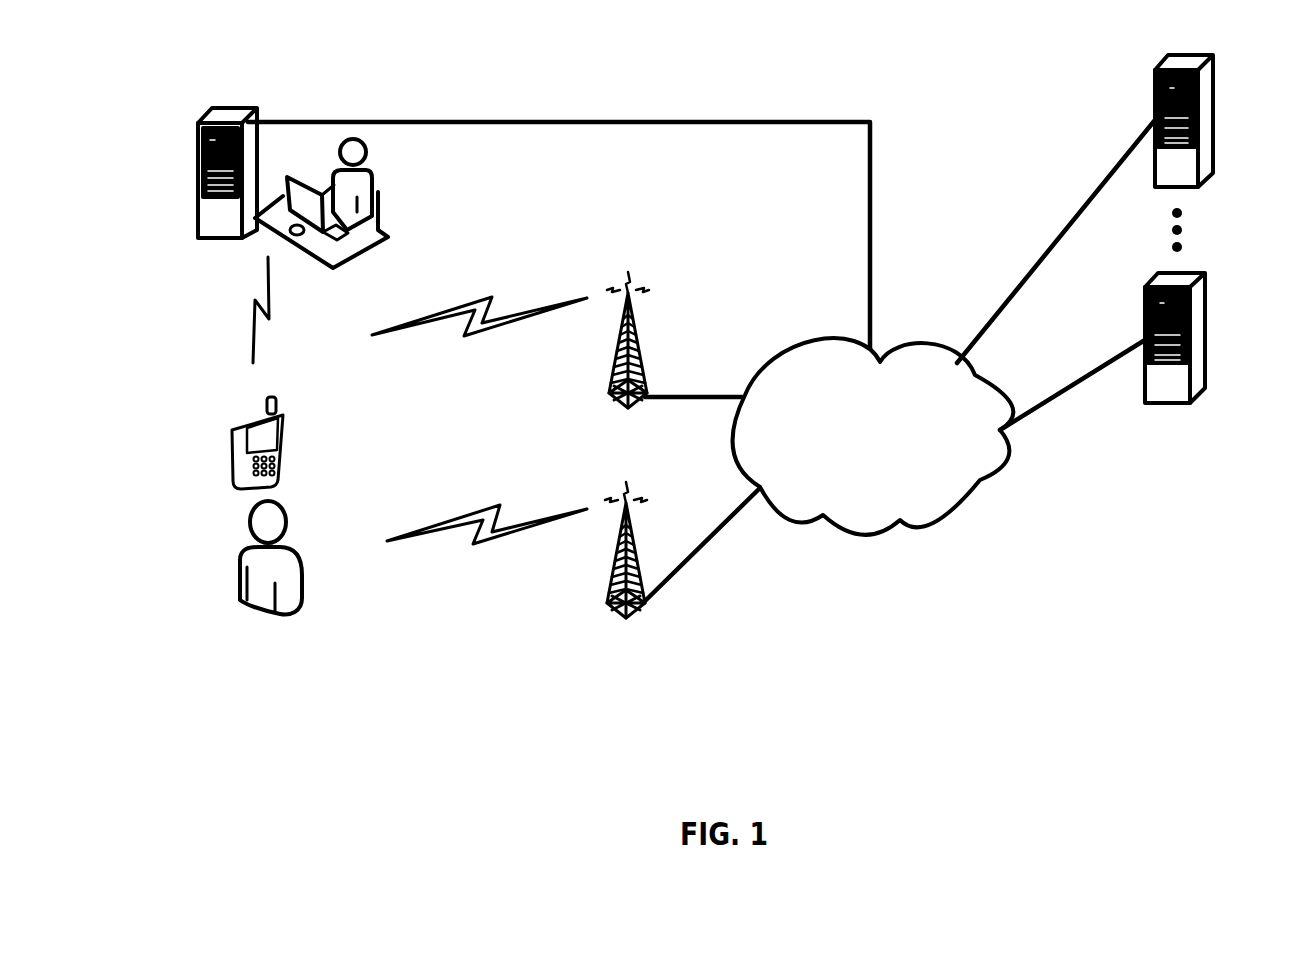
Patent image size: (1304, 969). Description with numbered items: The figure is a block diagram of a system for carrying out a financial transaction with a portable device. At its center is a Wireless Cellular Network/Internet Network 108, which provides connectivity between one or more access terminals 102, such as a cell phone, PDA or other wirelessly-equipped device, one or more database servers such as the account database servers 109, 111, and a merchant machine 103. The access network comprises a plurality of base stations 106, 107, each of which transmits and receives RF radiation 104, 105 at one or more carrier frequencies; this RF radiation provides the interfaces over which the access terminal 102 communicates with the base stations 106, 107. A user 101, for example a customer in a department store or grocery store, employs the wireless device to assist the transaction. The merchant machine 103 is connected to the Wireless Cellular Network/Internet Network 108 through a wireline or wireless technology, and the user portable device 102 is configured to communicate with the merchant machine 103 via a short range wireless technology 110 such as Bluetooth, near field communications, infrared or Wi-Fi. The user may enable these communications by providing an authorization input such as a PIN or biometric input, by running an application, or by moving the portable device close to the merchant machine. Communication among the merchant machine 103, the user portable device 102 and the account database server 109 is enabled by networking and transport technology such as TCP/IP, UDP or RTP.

The user 101 is at (238, 547).
The access terminal 102 is at (232, 425).
The merchant machine 103 is at (198, 128).
The RF radiation 104 is at (423, 315).
The RF radiation 105 is at (423, 530).
The base station 106 is at (613, 375).
The base station 107 is at (613, 577).
The Wireless Cellular Network/Internet Network 108 is at (885, 515).
The account database server 109 is at (1145, 293).
The short range wireless technology 110 is at (253, 303).
The account database server 111 is at (1155, 78).